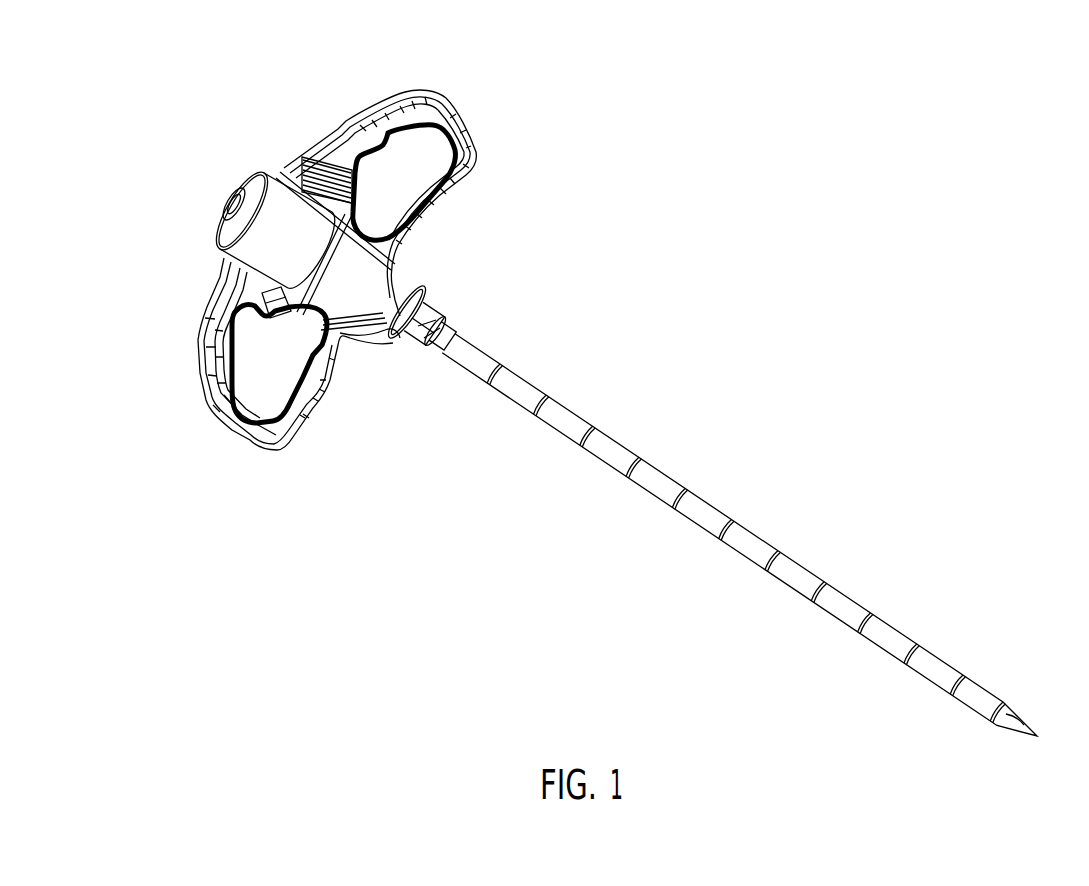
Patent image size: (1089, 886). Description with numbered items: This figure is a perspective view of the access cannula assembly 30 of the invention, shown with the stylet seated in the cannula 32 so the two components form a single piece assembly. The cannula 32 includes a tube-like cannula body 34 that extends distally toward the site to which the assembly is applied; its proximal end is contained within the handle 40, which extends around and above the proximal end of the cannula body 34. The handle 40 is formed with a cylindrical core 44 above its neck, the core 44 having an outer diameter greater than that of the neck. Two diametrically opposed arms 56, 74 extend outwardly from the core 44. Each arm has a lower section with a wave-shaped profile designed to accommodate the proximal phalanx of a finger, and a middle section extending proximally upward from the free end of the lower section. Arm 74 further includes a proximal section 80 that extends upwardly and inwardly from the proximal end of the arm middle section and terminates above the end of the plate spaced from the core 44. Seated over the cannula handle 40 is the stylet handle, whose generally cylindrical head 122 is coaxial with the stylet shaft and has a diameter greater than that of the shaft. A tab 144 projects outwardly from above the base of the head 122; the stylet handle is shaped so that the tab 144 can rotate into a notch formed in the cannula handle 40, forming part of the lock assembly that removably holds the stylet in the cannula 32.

The access cannula assembly 30 is at (713, 347).
The cannula 32 is at (445, 313).
The cannula body 34 is at (647, 491).
The handle 40 is at (310, 137).
The core 44 is at (341, 294).
The arm 56 is at (205, 420).
The arm 74 is at (455, 122).
The proximal section 80 is at (410, 92).
The head 122 is at (262, 247).
The tab 144 is at (272, 320).